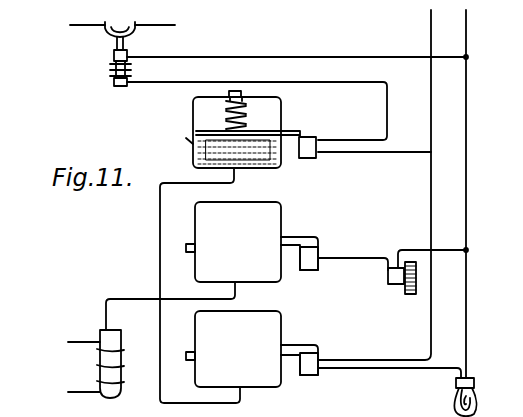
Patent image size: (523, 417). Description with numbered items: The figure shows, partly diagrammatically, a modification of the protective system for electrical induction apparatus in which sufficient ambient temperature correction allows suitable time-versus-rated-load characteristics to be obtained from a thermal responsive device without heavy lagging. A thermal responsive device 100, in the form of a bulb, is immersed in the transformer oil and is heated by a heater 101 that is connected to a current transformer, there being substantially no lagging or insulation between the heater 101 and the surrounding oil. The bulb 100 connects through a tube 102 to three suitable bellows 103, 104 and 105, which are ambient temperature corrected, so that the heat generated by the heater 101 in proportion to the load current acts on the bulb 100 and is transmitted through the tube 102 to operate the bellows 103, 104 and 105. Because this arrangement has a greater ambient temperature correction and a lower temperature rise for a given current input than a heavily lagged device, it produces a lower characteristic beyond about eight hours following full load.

The thermal responsive device 100 is at (101, 336).
The heater 101 is at (123, 355).
The tube 102 is at (128, 297).
The bellows 103 is at (279, 326).
The bellows 104 is at (277, 218).
The bellows 105 is at (283, 170).